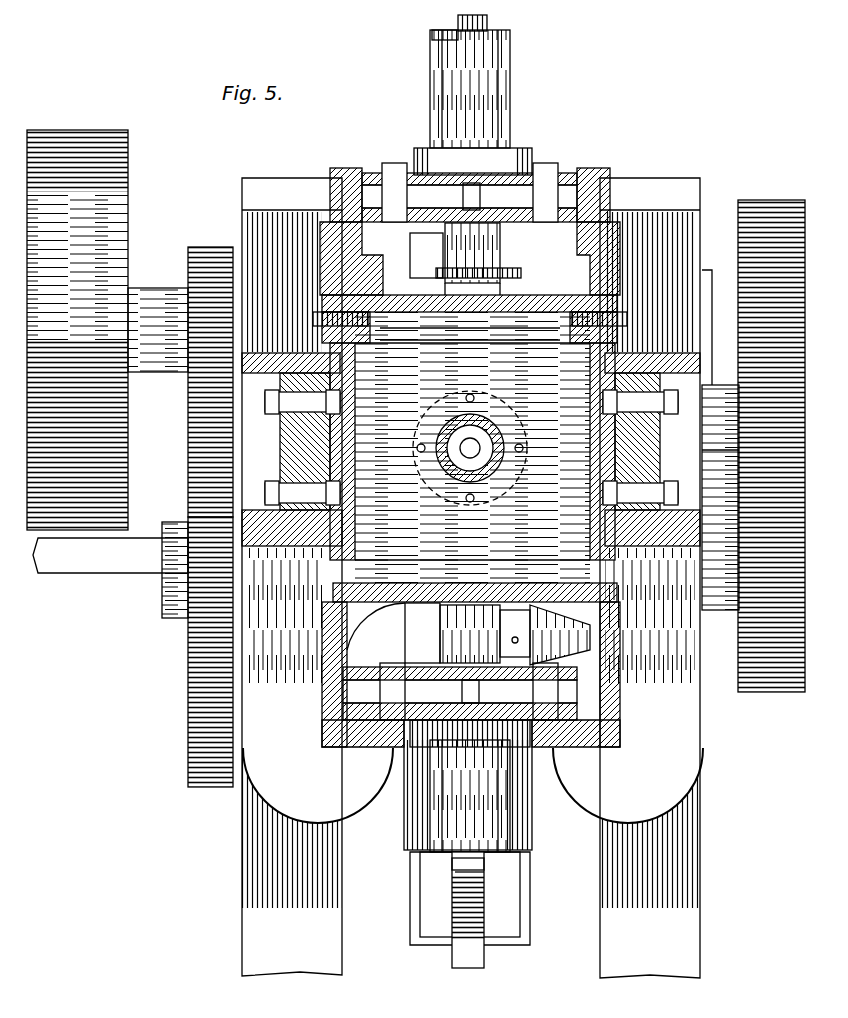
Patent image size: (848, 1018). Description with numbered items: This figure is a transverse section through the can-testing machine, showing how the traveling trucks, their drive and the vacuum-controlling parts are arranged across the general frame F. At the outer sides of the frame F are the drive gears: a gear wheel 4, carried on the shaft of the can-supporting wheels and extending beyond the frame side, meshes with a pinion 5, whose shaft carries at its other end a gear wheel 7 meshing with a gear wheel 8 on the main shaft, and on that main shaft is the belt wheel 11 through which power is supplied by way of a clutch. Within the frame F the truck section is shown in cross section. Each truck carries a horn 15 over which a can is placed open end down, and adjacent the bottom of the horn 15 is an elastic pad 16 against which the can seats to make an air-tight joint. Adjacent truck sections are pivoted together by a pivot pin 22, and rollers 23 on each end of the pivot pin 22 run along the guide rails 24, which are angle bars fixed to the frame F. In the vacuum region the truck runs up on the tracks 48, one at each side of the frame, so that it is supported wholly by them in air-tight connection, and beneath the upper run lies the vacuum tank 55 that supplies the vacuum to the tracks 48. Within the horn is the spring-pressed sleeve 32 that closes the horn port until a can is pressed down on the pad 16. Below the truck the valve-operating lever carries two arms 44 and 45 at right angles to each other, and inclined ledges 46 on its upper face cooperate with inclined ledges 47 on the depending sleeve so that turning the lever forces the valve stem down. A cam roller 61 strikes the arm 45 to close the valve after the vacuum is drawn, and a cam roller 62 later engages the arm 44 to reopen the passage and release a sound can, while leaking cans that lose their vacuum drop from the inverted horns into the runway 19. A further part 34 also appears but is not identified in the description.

The frame F is at (242, 912).
The gear wheel 4 is at (772, 692).
The pinion 5 is at (742, 640).
The gear wheel 7 is at (188, 672).
The gear wheel 8 is at (188, 256).
The belt wheel 11 is at (118, 178).
The horn 15 is at (510, 70).
The elastic pad 16 is at (528, 150).
The runway 19 is at (472, 968).
The pivot pin 22 is at (572, 192).
The roller 23 is at (394, 166).
The guide rail 24 is at (622, 192).
The sleeve 32 is at (432, 36).
The cotter pin 34 is at (468, 18).
The arm 44 is at (502, 300).
The arm 45 is at (424, 605).
The inclined ledge 46 is at (470, 262).
The inclined ledge 47 is at (458, 302).
The track 48 is at (342, 170).
The vacuum tank 55 is at (378, 583).
The cam roller 61 is at (428, 320).
The cam roller 62 is at (514, 608).